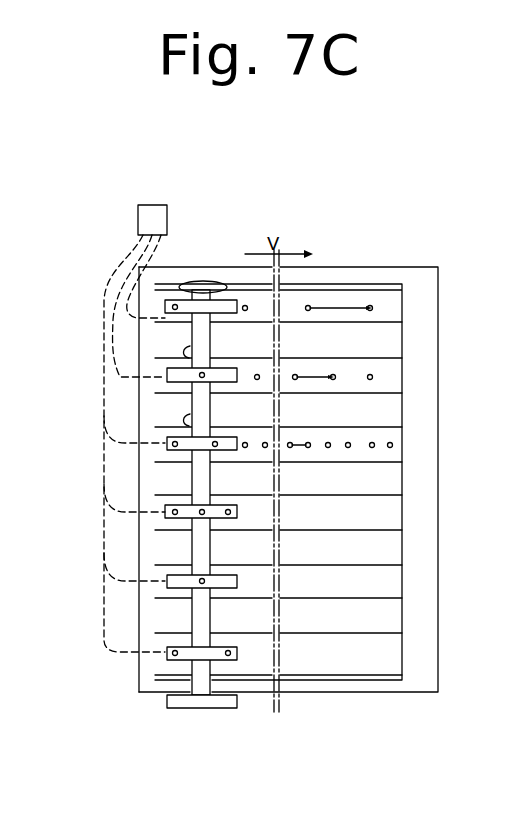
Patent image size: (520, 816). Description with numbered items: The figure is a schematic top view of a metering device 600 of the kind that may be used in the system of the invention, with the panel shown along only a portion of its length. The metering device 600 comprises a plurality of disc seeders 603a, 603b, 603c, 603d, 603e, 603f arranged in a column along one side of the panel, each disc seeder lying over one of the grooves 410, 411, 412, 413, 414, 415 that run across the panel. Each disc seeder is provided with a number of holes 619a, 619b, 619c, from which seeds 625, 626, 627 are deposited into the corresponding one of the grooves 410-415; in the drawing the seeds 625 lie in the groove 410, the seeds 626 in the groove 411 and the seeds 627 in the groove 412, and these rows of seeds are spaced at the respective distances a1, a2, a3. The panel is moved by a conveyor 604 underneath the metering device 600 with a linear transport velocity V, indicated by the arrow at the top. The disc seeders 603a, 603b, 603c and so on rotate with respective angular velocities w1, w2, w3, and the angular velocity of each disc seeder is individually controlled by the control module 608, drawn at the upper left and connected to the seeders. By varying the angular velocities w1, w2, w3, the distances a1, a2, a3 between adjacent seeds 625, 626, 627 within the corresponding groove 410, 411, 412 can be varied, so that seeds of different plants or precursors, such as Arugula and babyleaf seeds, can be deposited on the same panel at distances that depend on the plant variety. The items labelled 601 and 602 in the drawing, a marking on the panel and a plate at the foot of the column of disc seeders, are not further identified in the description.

The metering device 600 is at (276, 211).
The plate 601 is at (388, 628).
The base plate 602 is at (200, 702).
The disc seeder 603a is at (175, 307).
The disc seeder 603b is at (202, 375).
The disc seeder 603c is at (181, 441).
The disc seeder 603d is at (184, 514).
The disc seeder 603e is at (180, 583).
The disc seeder 603f is at (188, 654).
The conveyor 604 is at (357, 686).
The control module 608 is at (167, 218).
The holes 619a is at (133, 320).
The holes 619b is at (160, 362).
The holes 619c is at (215, 447).
The groove 410 is at (388, 317).
The groove 411 is at (388, 386).
The groove 412 is at (393, 436).
The groove 413 is at (380, 512).
The groove 414 is at (382, 585).
The groove 415 is at (390, 662).
The seeds 625 is at (308, 306).
The seeds 626 is at (335, 376).
The seeds 627 is at (372, 448).
The distance a1 is at (342, 309).
The distance a2 is at (311, 376).
The distance a3 is at (298, 444).
The angular velocity w1 is at (208, 277).
The angular velocity w2 is at (214, 347).
The angular velocity w3 is at (214, 416).